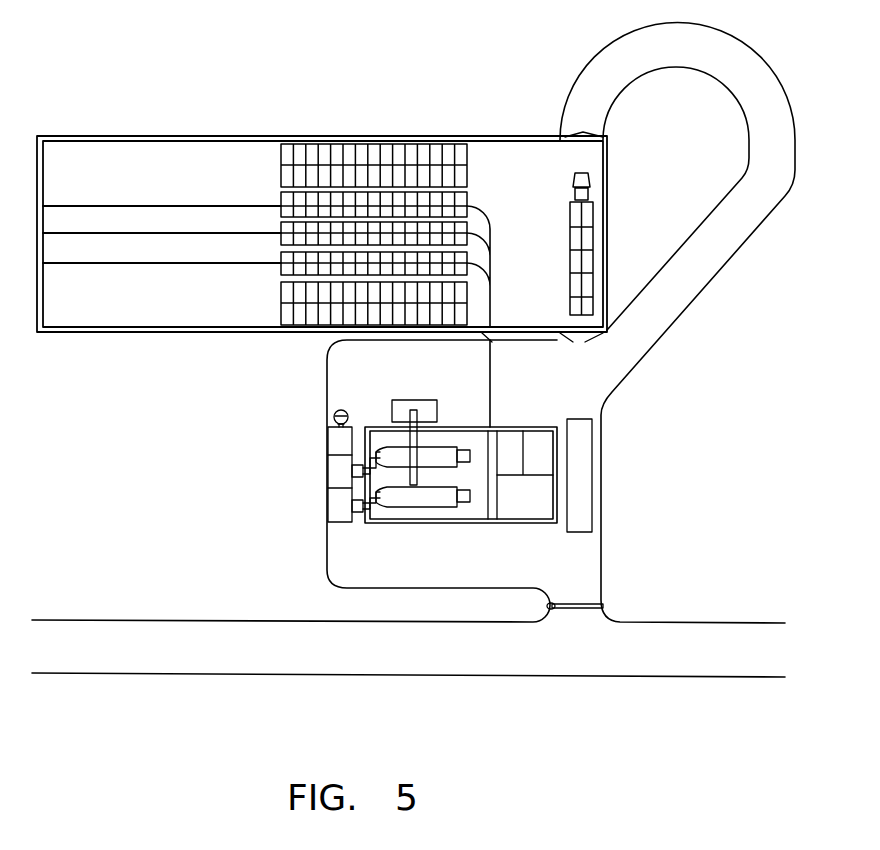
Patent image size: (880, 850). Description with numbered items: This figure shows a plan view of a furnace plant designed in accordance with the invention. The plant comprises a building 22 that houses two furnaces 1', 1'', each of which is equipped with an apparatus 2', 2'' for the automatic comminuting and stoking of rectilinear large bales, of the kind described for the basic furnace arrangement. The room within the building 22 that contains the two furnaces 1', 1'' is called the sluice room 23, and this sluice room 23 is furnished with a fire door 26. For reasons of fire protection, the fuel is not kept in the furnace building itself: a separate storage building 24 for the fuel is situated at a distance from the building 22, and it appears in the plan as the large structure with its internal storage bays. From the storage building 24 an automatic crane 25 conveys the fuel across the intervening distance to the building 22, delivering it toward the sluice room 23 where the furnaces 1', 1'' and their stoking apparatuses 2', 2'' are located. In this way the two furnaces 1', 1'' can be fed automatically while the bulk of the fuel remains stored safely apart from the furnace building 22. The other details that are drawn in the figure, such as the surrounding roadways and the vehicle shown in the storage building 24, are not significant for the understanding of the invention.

The storage building 24 is at (477, 137).
The automatic crane 25 is at (492, 368).
The fire door 26 is at (483, 425).
The sluice room 23 is at (491, 430).
The building 22 is at (543, 525).
The furnace 1' is at (409, 420).
The furnace 1'' is at (416, 522).
The apparatus for automatic comminuting and stoking 2' is at (457, 419).
The apparatus for automatic comminuting and stoking 2'' is at (470, 523).